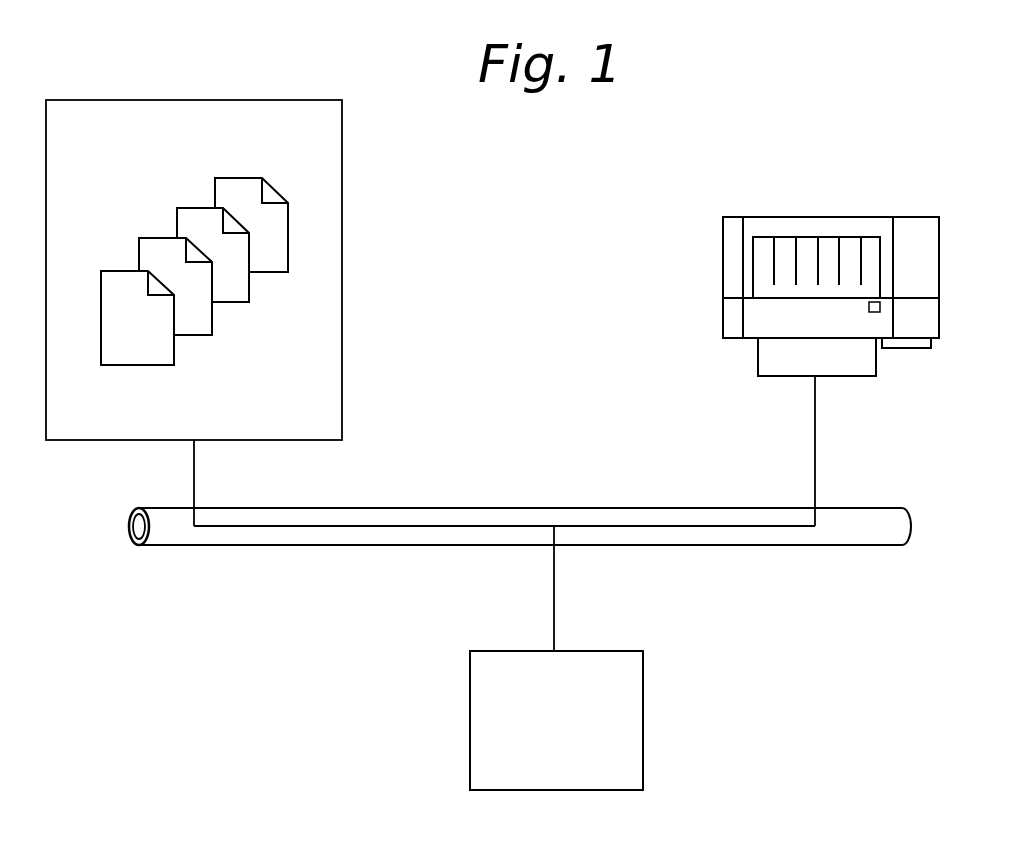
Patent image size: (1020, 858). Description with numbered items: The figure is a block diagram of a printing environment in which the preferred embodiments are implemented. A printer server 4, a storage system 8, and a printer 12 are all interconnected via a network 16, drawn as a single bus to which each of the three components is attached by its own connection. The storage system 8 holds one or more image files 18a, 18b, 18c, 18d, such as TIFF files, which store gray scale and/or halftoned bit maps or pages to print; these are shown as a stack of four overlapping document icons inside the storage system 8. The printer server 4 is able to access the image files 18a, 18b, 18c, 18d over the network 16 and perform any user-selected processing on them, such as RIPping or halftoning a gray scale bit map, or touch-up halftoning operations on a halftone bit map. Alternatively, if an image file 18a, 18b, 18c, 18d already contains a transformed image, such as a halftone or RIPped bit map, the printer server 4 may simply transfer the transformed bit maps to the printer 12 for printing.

The printer server 4 is at (556, 658).
The storage system 8 is at (194, 313).
The printer 12 is at (816, 217).
The network 16 is at (517, 508).
The image file 18a is at (140, 365).
The image file 18b is at (155, 238).
The image file 18c is at (240, 302).
The image file 18d is at (240, 178).